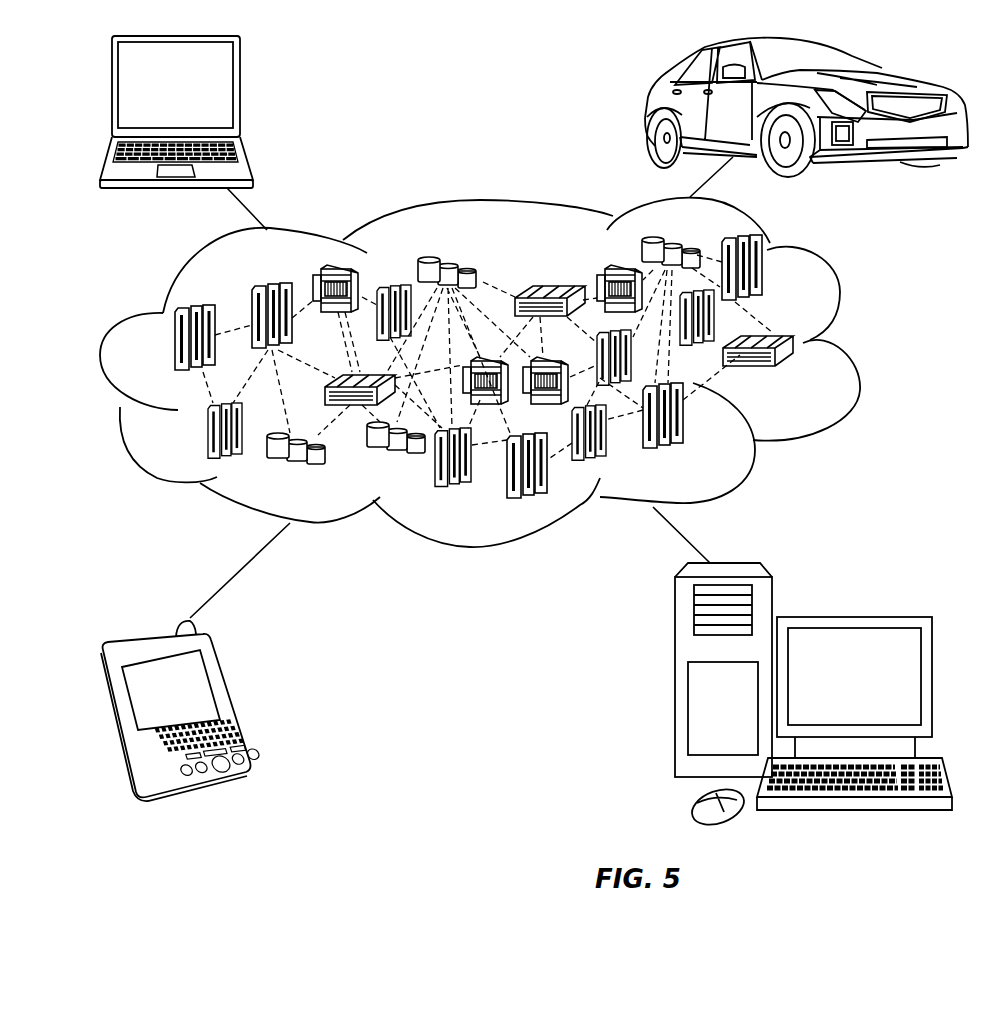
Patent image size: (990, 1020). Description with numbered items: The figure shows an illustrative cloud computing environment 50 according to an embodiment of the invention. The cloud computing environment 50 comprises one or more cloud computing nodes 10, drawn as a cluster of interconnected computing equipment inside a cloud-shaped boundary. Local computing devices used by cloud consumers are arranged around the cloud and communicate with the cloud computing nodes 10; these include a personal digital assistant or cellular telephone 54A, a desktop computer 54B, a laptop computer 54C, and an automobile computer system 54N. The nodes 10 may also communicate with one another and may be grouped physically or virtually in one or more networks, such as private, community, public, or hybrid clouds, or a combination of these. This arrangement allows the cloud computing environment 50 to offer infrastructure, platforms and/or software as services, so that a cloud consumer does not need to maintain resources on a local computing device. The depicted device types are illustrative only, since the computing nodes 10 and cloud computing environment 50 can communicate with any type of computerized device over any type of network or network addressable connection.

The laptop computer 54C is at (240, 92).
The automobile computer system 54N is at (645, 108).
The personal digital assistant (PDA) or cellular telephone 54A is at (228, 703).
The desktop computer 54B is at (855, 610).
The cloud computing environment 50 is at (853, 346).
The cloud computing nodes 10 is at (798, 376).